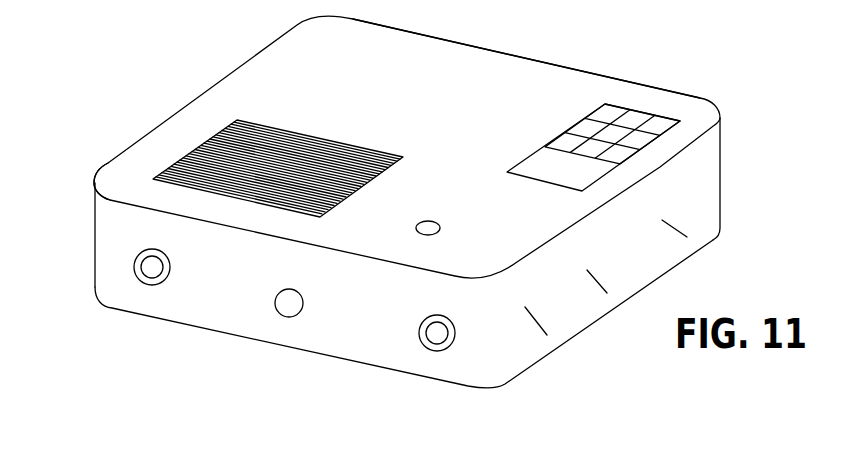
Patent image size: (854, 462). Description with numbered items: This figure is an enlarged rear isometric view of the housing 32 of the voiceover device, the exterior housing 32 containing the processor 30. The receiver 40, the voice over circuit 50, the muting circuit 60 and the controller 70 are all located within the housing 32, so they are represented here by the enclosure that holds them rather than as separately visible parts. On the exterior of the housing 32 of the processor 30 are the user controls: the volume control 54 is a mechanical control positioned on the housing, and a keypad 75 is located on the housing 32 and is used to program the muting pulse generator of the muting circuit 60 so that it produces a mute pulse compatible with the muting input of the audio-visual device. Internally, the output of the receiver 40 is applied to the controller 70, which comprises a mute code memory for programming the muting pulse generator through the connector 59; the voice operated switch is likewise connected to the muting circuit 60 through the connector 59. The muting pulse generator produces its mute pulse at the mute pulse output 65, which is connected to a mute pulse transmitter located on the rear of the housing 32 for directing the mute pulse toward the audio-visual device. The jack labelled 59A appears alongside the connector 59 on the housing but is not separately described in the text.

The processor 30 is at (445, 72).
The housing 32 is at (110, 170).
The receiver 40 is at (542, 102).
The voice over circuit 50 is at (703, 245).
The volume control 54 is at (424, 216).
The connector 59 is at (437, 340).
The right audio jack 59A is at (148, 272).
The muting circuit 60 is at (620, 307).
The mute pulse output 65 is at (289, 310).
The controller 70 is at (555, 350).
The keypad 75 is at (638, 120).